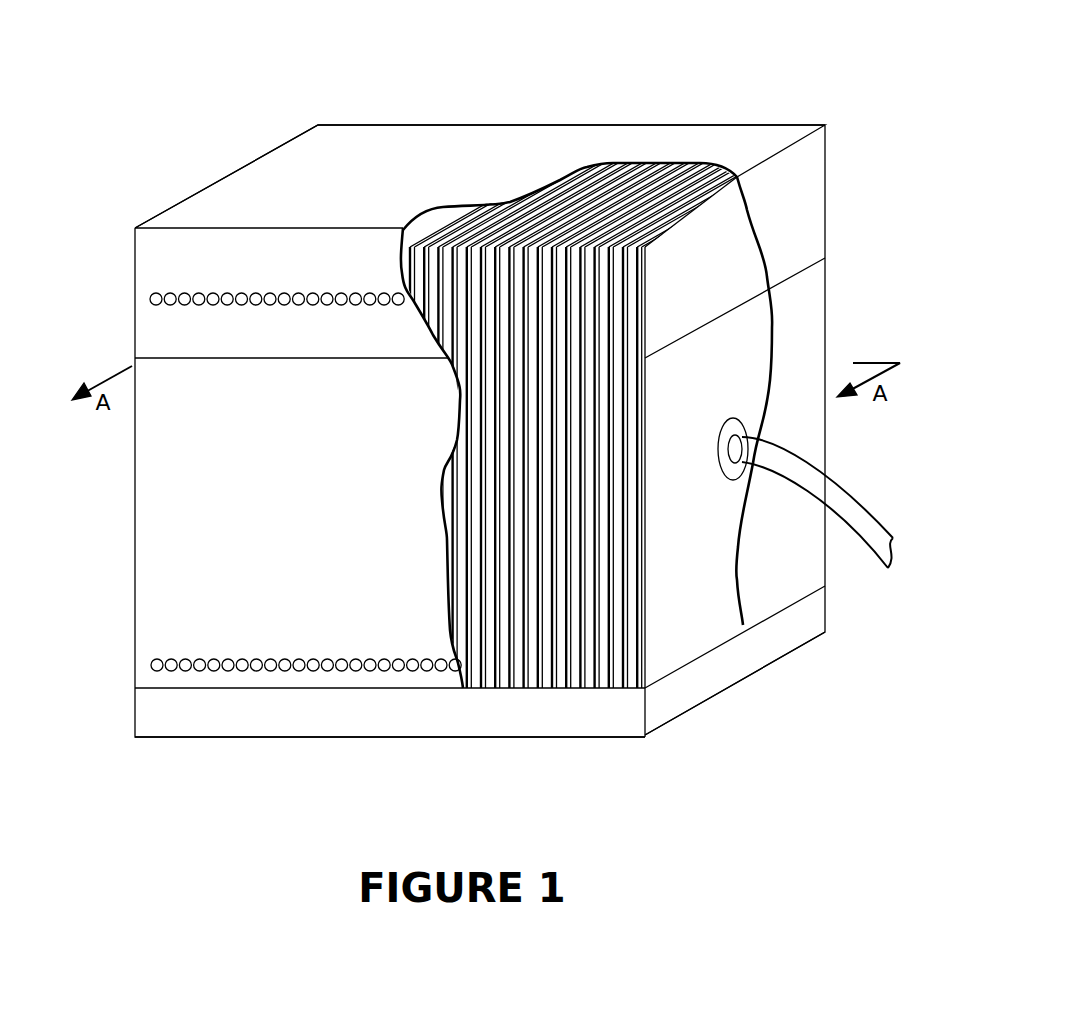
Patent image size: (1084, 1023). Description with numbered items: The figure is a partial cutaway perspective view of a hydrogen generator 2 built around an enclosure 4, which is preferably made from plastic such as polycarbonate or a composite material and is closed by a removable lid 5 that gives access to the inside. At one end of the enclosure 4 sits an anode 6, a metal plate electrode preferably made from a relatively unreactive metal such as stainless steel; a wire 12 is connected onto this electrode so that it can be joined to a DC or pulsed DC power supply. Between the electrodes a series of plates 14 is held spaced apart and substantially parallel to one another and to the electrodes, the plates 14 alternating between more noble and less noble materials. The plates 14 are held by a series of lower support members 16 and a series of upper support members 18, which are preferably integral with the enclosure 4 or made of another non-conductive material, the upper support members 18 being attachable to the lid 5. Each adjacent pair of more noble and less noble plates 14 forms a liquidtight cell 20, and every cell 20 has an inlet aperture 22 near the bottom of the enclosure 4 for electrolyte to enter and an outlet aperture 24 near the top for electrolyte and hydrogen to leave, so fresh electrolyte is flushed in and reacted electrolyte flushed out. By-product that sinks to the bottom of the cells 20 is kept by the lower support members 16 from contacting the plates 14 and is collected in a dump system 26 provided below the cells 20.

The hydrogen generator 2 is at (113, 267).
The enclosure 4 is at (152, 537).
The lid 5 is at (247, 183).
The anode 6 is at (758, 312).
The wire 12 is at (853, 547).
The plate 14 is at (520, 462).
The lower support member 16 is at (673, 652).
The upper support member 18 is at (651, 258).
The cell 20 is at (527, 545).
The inlet aperture 22 is at (369, 672).
The outlet aperture 24 is at (226, 293).
The dump system 26 is at (233, 717).